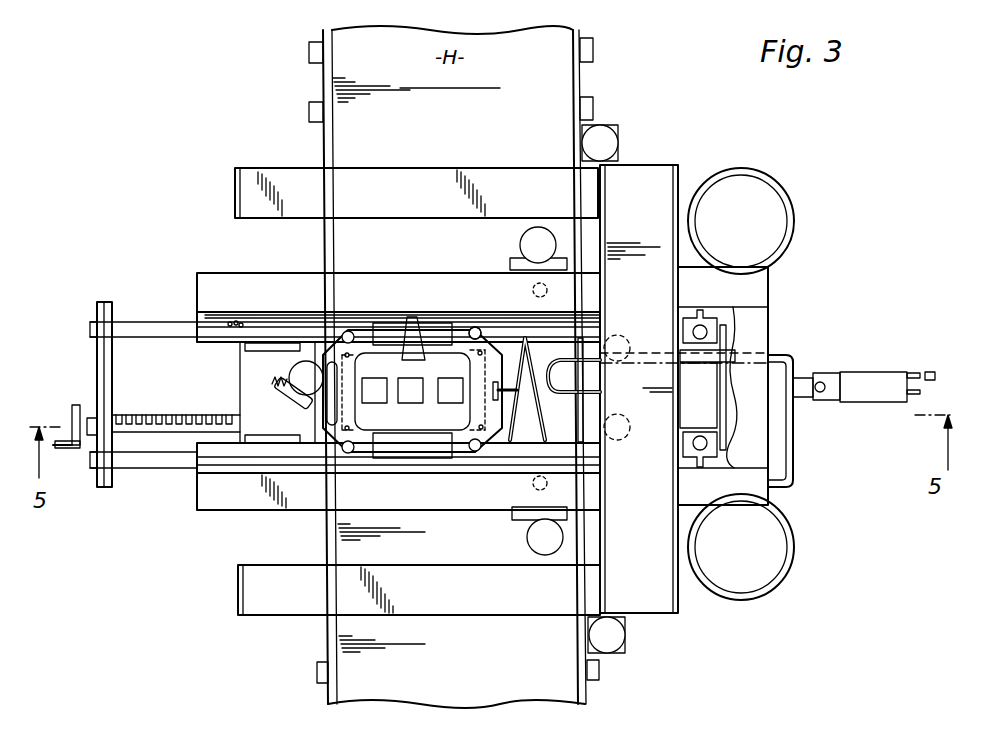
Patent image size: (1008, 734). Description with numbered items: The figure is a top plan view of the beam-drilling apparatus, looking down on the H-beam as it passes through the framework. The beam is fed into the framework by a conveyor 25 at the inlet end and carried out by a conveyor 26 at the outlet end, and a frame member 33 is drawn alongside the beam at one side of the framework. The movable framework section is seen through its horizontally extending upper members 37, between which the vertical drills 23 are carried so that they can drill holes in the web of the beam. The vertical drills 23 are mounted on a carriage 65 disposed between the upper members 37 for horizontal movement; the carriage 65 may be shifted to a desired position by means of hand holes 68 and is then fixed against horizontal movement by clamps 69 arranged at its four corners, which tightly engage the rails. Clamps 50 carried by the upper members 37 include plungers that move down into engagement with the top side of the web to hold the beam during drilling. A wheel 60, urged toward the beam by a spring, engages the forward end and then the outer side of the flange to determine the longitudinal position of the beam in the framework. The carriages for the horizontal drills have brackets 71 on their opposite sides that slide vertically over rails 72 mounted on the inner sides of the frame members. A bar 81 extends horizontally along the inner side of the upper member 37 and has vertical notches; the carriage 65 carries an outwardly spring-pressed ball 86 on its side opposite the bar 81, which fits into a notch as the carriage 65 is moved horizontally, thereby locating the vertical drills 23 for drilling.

The vertical drills 23 is at (370, 404).
The conveyor 25 is at (597, 46).
The conveyor 26 is at (317, 669).
The frame bar 33 is at (643, 165).
The upper members 37 is at (424, 510).
The clamps 50 is at (527, 542).
The wheel 60 is at (296, 367).
The carriage 65 is at (340, 448).
The hand holes 68 is at (330, 410).
The clamps 69 is at (475, 326).
The brackets 71 is at (733, 437).
The rails 72 is at (702, 333).
The bar 81 is at (306, 320).
The spring-pressed ball 86 is at (412, 316).